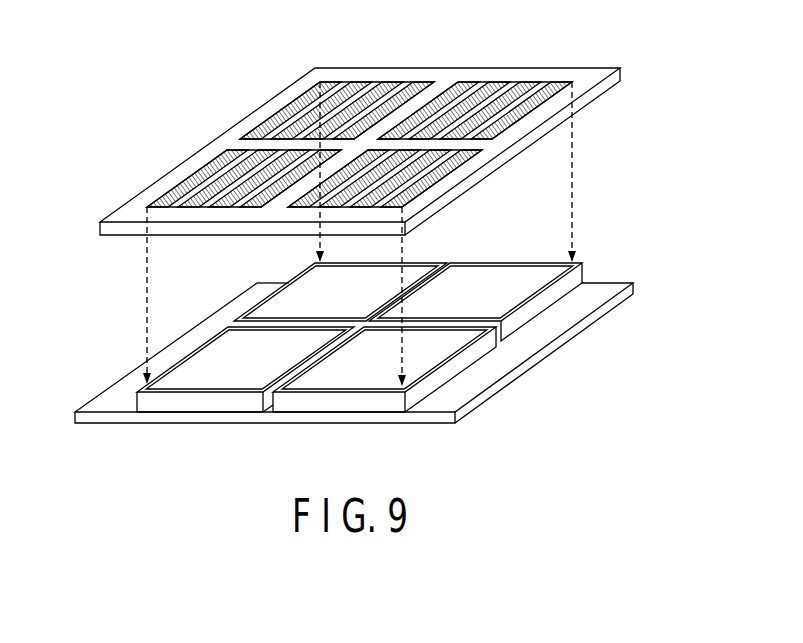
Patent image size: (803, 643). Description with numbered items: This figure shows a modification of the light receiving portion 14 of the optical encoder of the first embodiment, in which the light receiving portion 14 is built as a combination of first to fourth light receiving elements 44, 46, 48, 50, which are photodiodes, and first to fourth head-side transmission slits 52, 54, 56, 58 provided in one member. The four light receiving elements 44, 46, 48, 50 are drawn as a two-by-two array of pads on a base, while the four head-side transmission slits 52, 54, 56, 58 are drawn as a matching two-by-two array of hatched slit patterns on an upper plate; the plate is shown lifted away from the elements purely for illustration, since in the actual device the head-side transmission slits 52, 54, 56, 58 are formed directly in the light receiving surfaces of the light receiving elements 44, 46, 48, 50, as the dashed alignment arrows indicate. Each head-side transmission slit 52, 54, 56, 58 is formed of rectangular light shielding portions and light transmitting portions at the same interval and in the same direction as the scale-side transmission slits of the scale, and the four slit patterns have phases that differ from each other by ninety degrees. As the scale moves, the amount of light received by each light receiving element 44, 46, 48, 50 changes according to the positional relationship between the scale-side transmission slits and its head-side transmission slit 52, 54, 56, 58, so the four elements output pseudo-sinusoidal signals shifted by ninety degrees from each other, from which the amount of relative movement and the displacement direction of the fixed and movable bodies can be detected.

The light receiving portion 14 is at (313, 458).
The first light receiving element 44 is at (270, 293).
The second light receiving element 46 is at (183, 357).
The third light receiving element 48 is at (517, 323).
The fourth light receiving element 50 is at (447, 375).
The first head-side transmission slit 52 is at (299, 97).
The second head-side transmission slit 54 is at (188, 177).
The third head-side transmission slit 56 is at (523, 117).
The fourth head-side transmission slit 58 is at (437, 183).